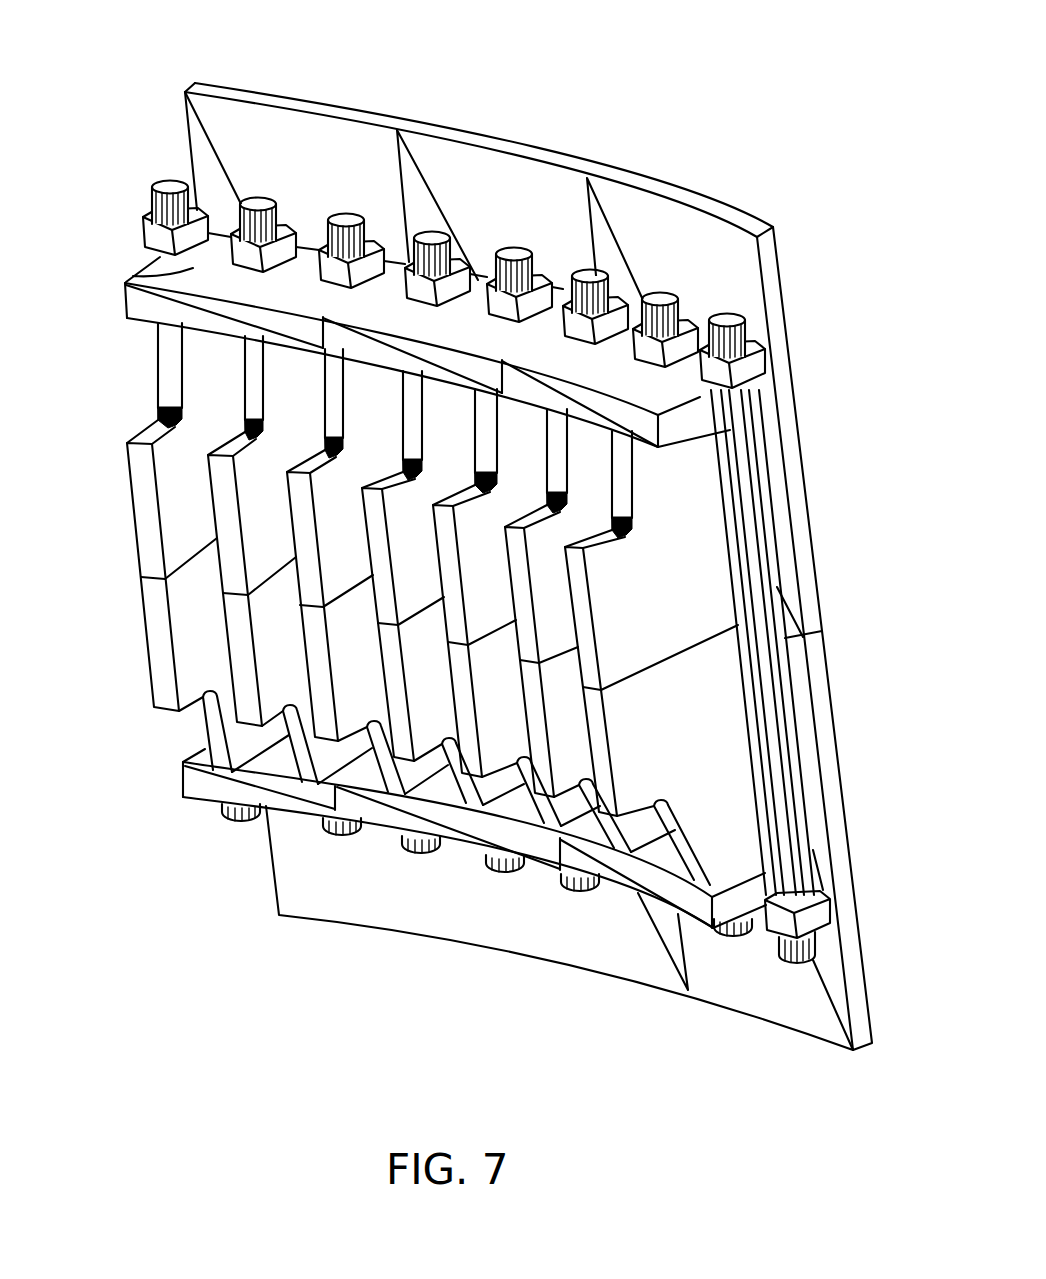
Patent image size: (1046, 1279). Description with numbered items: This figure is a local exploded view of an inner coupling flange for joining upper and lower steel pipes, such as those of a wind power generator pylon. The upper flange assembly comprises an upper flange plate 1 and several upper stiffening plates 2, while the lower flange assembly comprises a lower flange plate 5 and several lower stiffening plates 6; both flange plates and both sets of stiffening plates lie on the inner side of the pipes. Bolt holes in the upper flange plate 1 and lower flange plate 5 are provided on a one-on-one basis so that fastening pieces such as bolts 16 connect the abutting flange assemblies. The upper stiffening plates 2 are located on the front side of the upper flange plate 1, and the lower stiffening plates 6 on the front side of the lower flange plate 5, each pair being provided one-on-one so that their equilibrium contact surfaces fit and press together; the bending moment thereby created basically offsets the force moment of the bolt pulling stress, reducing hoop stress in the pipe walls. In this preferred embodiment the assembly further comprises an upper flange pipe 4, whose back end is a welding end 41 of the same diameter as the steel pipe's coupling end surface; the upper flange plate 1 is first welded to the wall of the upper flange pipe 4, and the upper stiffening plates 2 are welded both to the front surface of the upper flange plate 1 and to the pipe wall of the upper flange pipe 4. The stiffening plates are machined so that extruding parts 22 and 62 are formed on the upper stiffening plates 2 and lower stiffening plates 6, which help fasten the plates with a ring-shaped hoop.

The welding end 41 is at (345, 112).
The upper flange pipe 4 is at (237, 138).
The upper flange plate 1 is at (137, 278).
The bolts 16 is at (640, 300).
The upper stiffening plates 2 is at (637, 617).
The extruding parts 22 is at (453, 619).
The lower stiffening plates 6 is at (692, 748).
The extruding parts 62 is at (507, 705).
The lower flange plate 5 is at (638, 893).